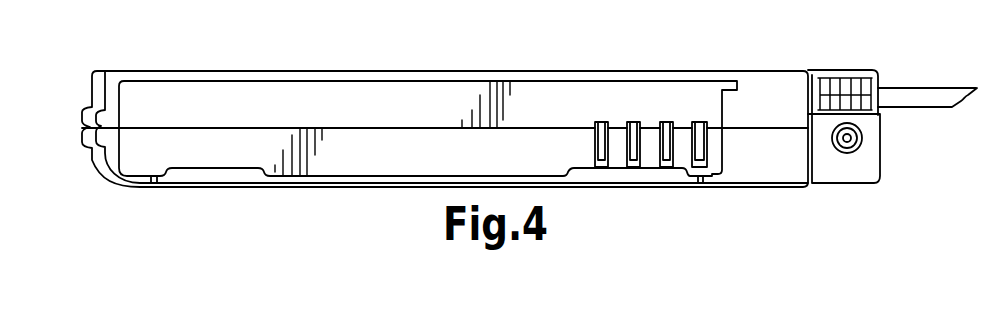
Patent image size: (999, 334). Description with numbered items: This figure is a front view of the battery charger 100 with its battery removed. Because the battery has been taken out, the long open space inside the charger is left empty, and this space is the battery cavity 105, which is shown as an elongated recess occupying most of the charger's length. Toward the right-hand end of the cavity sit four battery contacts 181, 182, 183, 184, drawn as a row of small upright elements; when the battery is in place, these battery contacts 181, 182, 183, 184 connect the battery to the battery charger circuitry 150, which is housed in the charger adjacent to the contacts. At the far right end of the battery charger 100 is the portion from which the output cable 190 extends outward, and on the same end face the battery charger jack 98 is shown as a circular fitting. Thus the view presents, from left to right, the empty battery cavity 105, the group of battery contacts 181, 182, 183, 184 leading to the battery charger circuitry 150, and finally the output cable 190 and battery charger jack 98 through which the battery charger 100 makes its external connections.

The battery cavity 105 is at (395, 97).
The battery charger circuitry 150 is at (768, 93).
The battery contact 181 is at (603, 121).
The battery contact 182 is at (638, 121).
The battery contact 183 is at (672, 121).
The battery contact 184 is at (705, 121).
The battery charger 100 is at (852, 70).
The battery charger jack 98 is at (862, 137).
The output cable 190 is at (923, 88).